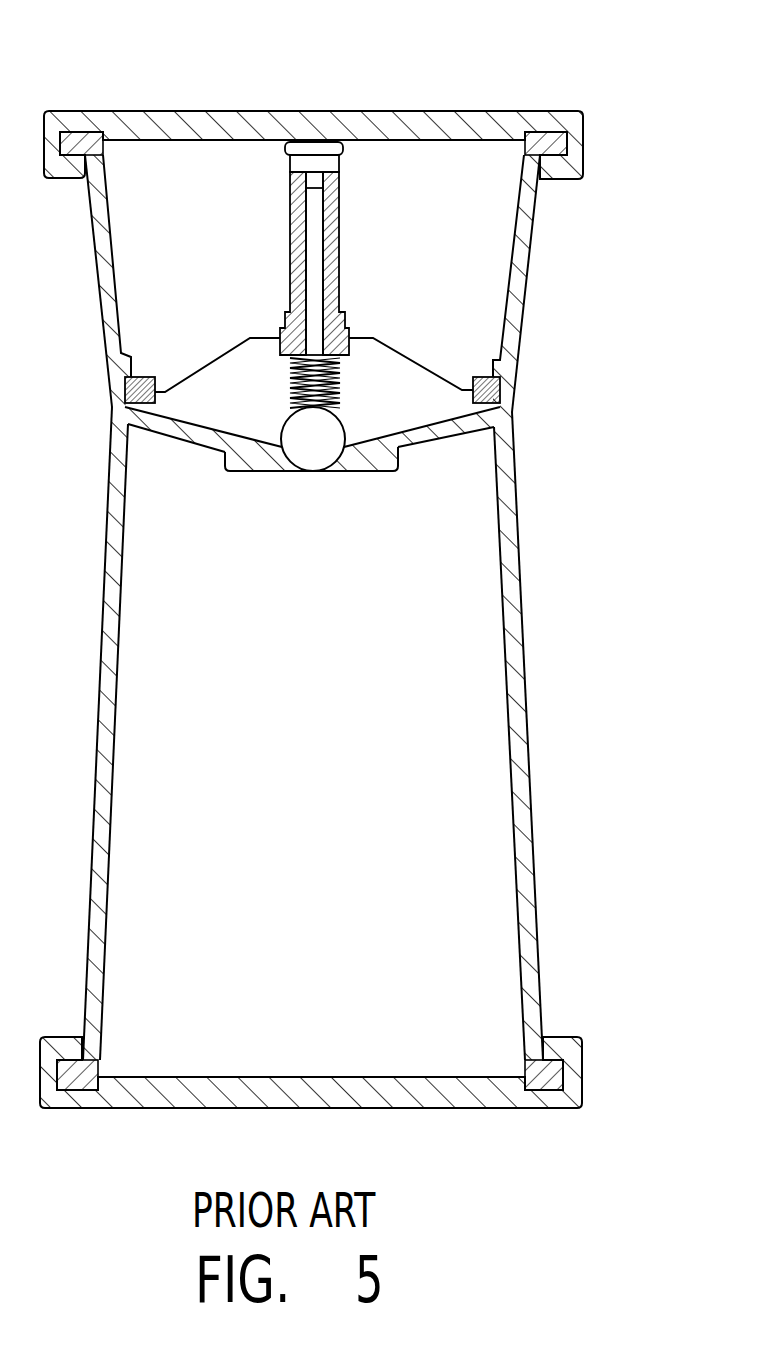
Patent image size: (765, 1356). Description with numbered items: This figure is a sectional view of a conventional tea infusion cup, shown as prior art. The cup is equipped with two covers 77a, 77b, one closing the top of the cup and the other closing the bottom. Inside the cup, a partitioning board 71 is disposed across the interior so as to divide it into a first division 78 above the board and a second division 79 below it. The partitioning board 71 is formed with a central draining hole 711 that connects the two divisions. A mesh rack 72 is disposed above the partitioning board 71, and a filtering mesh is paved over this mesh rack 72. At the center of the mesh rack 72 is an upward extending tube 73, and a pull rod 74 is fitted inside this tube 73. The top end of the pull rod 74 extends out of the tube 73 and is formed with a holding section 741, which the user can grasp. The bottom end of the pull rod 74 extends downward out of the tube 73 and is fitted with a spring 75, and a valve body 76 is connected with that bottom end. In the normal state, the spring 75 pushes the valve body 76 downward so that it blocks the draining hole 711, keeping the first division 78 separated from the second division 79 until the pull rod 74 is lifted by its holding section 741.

The holding section 741 is at (325, 140).
The cover 77a is at (490, 128).
The pull rod 74 is at (317, 232).
The tube 73 is at (330, 223).
The mesh rack 72 is at (212, 357).
The first division 78 is at (485, 263).
The spring 75 is at (340, 372).
The valve body 76 is at (303, 455).
The central draining hole 711 is at (336, 473).
The partitioning board 71 is at (312, 490).
The second division 79 is at (483, 663).
The cover 77b is at (565, 1036).